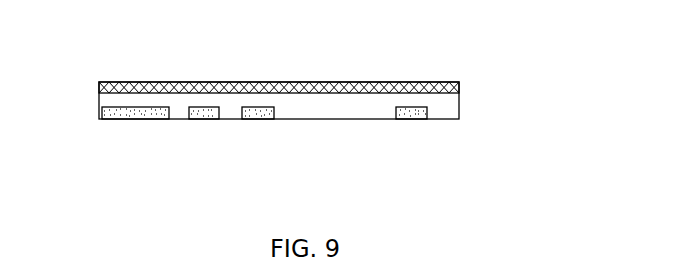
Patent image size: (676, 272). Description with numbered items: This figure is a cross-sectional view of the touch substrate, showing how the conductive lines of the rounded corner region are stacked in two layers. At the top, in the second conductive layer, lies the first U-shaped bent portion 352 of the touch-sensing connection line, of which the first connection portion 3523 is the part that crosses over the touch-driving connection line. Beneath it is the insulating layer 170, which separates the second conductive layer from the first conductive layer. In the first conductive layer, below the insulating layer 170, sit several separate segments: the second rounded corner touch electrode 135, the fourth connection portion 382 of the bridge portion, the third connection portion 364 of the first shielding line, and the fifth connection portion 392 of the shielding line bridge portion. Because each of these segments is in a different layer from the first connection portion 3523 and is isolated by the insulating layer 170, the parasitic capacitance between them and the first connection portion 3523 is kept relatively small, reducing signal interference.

The first U-shaped bent portion 352 is at (279, 60).
The first connection portion 3523 is at (203, 82).
The second rounded corner touch electrode 135 is at (122, 121).
The fourth connection portion 382 is at (203, 121).
The third connection portion 364 is at (255, 121).
The fifth connection portion 392 is at (410, 121).
The insulating layer 170 is at (333, 109).